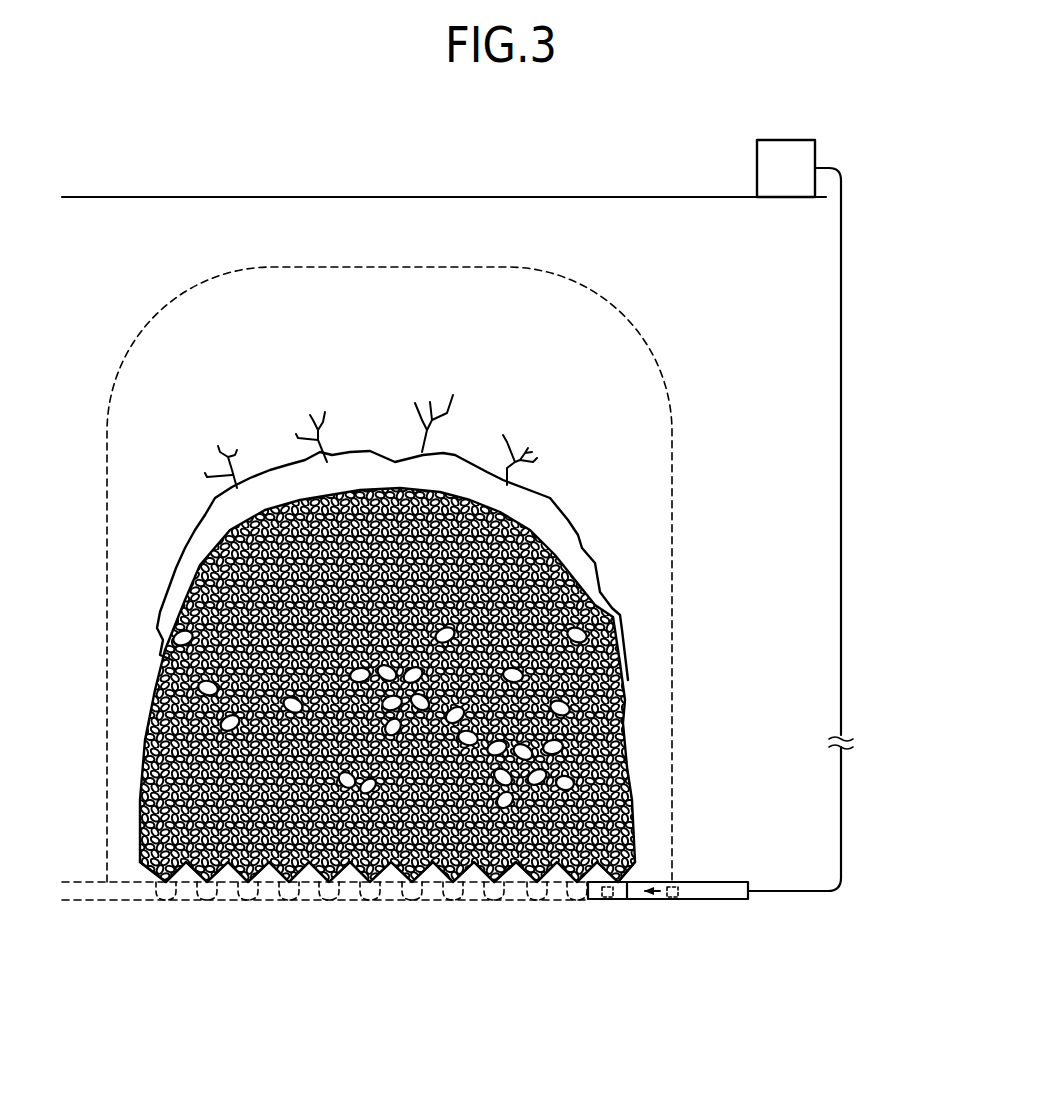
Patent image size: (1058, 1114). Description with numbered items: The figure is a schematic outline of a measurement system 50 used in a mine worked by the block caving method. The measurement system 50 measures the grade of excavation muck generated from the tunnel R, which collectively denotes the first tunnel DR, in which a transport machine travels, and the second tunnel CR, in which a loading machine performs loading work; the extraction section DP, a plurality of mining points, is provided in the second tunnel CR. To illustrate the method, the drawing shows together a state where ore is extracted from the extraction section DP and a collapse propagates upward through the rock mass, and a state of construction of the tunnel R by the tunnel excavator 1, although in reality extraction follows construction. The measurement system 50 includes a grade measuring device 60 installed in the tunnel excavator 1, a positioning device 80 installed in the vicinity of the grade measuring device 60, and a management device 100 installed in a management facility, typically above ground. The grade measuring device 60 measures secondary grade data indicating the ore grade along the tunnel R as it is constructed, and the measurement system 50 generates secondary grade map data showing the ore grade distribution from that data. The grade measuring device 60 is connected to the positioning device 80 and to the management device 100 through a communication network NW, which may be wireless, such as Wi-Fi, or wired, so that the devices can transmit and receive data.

The management device 100 is at (757, 159).
The measurement system 50 is at (876, 158).
The communication network NW is at (858, 405).
The first tunnel DR is at (80, 900).
The second tunnel CR is at (329, 896).
The extraction section DP is at (335, 900).
The tunnel excavator 1 is at (596, 900).
The grade measuring device 60 is at (607, 900).
The tunnel R is at (652, 900).
The positioning device 80 is at (673, 900).